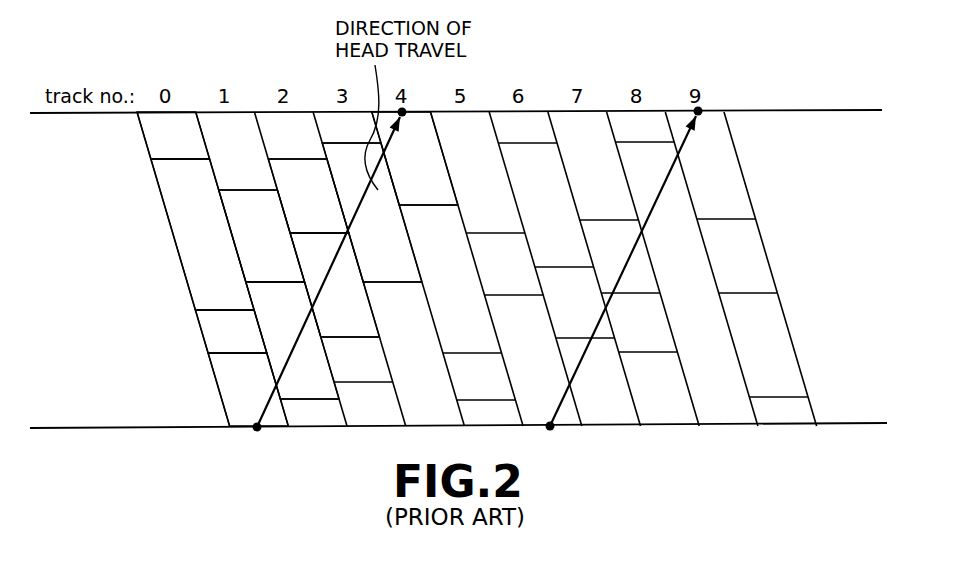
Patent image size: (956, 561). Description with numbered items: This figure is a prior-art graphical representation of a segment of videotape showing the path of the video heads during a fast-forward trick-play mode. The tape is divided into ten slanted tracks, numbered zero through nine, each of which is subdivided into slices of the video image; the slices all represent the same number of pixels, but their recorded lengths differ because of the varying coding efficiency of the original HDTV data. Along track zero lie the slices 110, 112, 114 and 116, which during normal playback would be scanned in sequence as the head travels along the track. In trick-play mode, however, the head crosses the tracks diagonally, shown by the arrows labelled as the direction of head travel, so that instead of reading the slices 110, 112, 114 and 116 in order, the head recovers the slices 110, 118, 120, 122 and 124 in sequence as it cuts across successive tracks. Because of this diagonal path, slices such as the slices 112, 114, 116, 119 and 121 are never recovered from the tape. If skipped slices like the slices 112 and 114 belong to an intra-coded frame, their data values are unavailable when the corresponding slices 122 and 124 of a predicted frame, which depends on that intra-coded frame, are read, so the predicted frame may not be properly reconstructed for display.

The slice of the video image 110 is at (219, 392).
The slice of the video image 112 is at (203, 336).
The slice of the video image 114 is at (169, 222).
The slice of the video image 116 is at (144, 143).
The slice 118 is at (293, 313).
The slice 119 is at (272, 223).
The slice 120 is at (359, 325).
The slice 121 is at (318, 195).
The slice 122 is at (400, 248).
The slice 124 is at (437, 172).